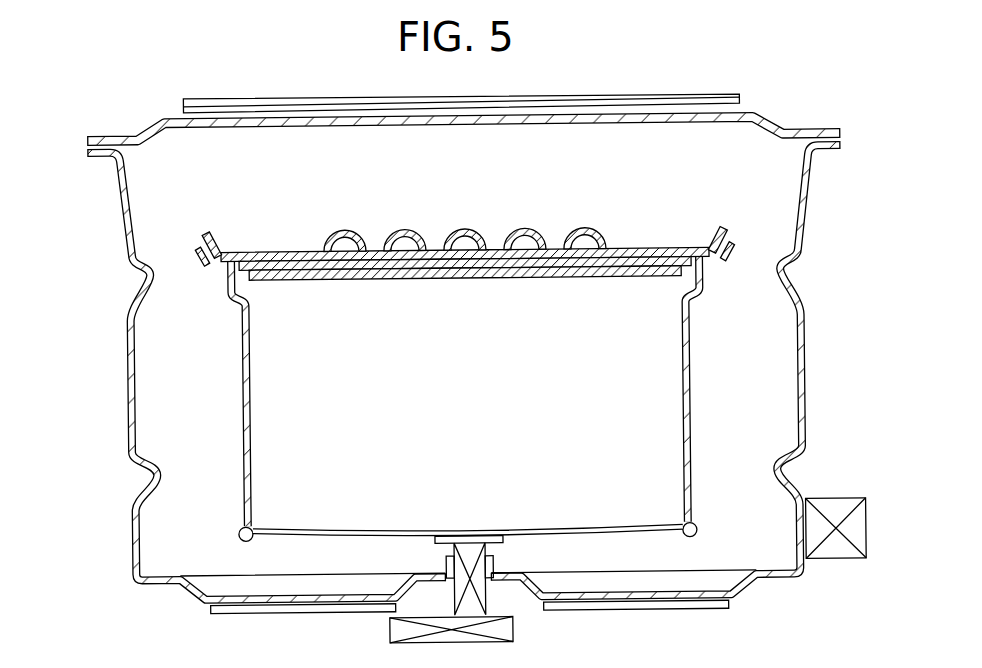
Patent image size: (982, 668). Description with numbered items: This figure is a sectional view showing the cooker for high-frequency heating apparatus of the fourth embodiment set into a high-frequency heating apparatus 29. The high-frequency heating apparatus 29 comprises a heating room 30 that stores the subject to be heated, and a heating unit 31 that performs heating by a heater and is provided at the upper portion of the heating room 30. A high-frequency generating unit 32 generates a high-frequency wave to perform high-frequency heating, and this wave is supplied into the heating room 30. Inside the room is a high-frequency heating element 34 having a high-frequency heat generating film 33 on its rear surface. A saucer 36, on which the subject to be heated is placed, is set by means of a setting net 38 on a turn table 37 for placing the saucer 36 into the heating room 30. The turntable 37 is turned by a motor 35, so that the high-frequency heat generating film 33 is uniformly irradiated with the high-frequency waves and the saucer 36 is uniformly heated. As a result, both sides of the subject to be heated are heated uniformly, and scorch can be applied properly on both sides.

The high-frequency heating apparatus 29 is at (106, 358).
The heating room 30 is at (775, 361).
The heating unit 31 is at (646, 99).
The high-frequency generating unit 32 is at (837, 509).
The high-frequency heat generating film 33 is at (441, 279).
The high-frequency heating element 34 is at (634, 285).
The motor 35 is at (512, 631).
The saucer 36 is at (530, 239).
The turn table 37 is at (550, 523).
The setting net 38 is at (254, 366).